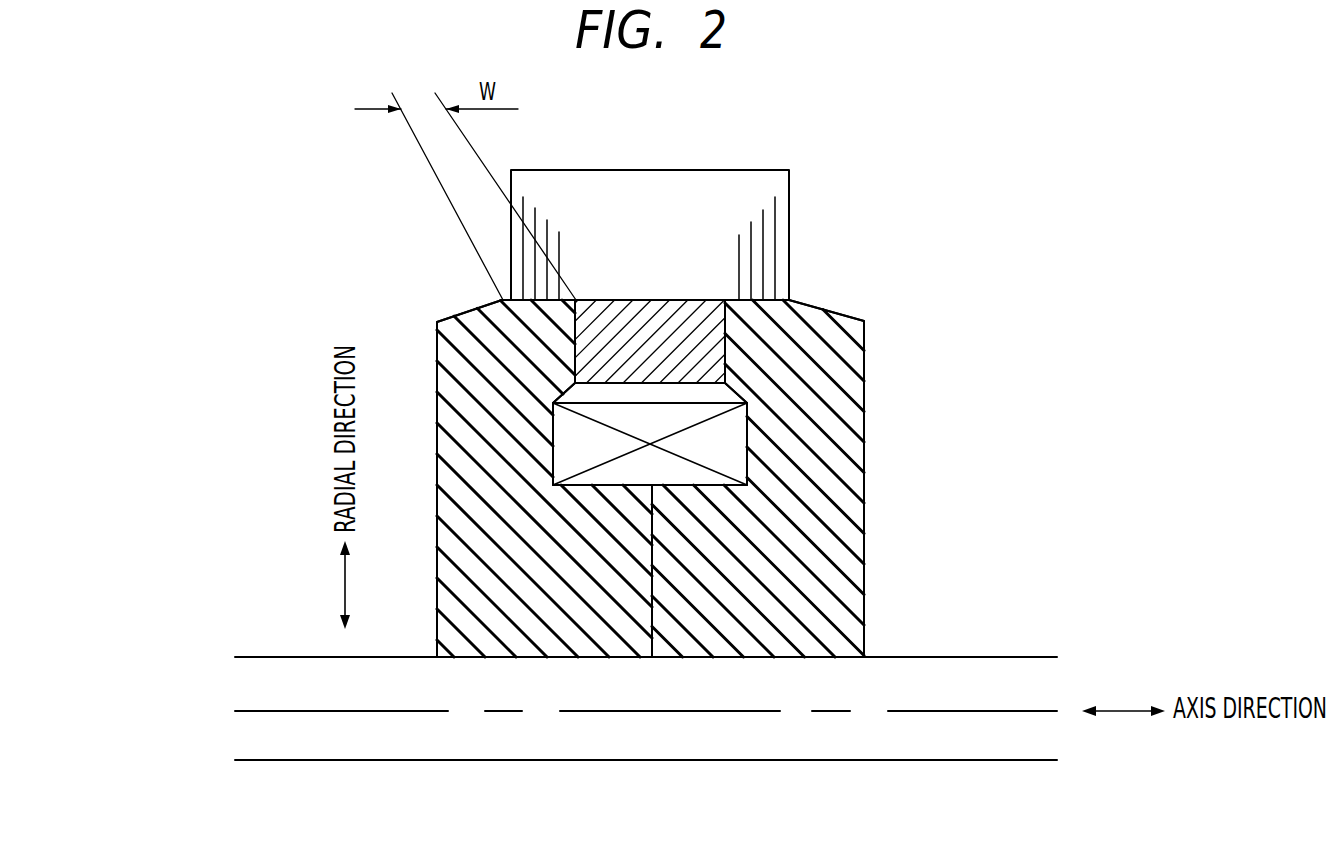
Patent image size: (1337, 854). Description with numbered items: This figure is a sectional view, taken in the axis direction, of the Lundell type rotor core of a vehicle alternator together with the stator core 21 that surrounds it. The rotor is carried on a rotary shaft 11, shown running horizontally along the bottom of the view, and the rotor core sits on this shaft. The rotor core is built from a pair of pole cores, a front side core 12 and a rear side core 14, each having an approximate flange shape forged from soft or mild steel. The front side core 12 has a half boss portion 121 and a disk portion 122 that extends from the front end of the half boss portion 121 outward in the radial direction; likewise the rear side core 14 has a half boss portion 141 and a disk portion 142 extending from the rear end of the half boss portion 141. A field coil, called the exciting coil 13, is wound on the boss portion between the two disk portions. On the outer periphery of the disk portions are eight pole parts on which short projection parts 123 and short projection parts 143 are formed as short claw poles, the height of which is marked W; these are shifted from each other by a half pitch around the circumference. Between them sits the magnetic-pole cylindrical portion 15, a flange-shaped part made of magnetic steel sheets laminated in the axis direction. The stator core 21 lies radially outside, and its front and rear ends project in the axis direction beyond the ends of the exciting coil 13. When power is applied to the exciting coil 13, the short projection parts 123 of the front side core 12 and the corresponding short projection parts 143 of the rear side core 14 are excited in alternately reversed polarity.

The rotary shaft 11 is at (955, 740).
The front side core 12 is at (392, 498).
The half boss portion 121 is at (532, 595).
The disk portion 122 is at (452, 337).
The short projection parts 123 is at (560, 331).
The field coil 13 is at (727, 443).
The rear side core 14 is at (904, 523).
The half boss portion 141 is at (772, 573).
The disk portion 142 is at (830, 333).
The short projection parts 143 is at (788, 298).
The magnetic-pole cylindrical portion 15 is at (648, 298).
The stator core 21 is at (747, 200).